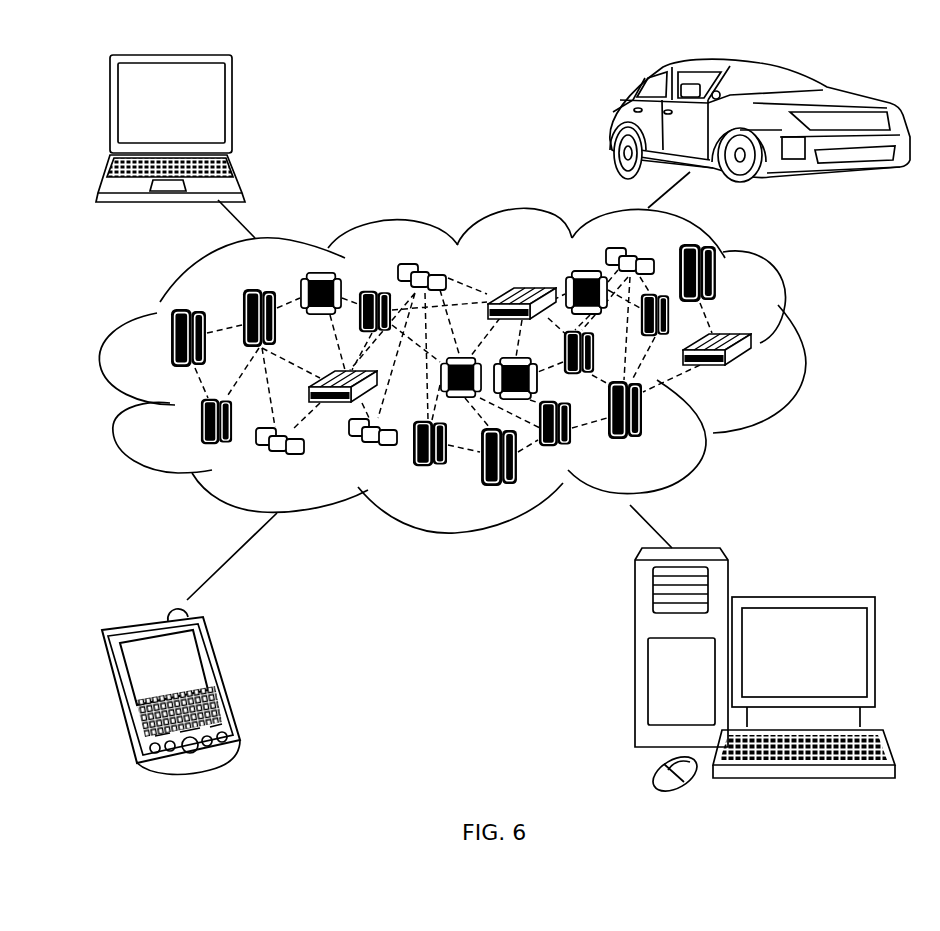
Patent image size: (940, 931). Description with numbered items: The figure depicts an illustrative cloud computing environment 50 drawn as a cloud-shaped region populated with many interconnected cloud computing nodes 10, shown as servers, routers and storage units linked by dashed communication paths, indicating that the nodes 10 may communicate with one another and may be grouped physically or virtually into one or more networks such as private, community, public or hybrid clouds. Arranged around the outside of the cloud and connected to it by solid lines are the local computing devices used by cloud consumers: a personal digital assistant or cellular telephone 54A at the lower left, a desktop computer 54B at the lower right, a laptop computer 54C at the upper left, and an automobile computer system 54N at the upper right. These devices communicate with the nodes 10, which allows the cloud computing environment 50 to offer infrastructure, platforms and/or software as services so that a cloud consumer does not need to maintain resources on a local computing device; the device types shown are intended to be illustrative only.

The cloud computing node 10 is at (757, 376).
The cloud computing environment 50 is at (478, 404).
The personal digital assistant or cellular telephone 54A is at (223, 680).
The desktop computer 54B is at (802, 595).
The laptop computer 54C is at (233, 108).
The automobile computer system 54N is at (609, 124).